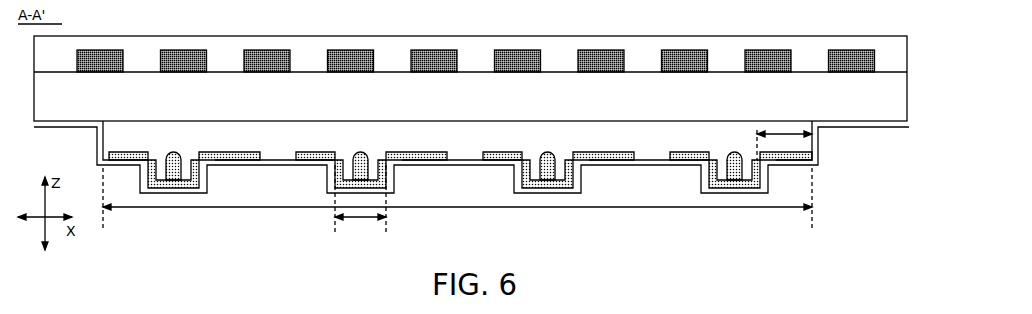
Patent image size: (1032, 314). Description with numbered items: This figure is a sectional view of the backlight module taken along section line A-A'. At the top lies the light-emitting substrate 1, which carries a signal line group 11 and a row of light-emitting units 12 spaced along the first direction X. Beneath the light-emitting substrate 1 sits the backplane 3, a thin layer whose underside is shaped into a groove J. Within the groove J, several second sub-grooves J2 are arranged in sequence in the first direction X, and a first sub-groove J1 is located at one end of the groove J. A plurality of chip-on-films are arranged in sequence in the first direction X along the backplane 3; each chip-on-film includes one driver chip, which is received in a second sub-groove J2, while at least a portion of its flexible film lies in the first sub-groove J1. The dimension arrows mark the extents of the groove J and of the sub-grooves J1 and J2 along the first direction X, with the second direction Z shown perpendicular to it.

The light-emitting substrate 1 is at (485, 69).
The signal line group 11 is at (390, 97).
The light-emitting units 12 is at (683, 50).
The backplane 3 is at (888, 127).
The groove J is at (452, 208).
The first sub-groove J1 is at (785, 136).
The second sub-groove J2 is at (356, 220).